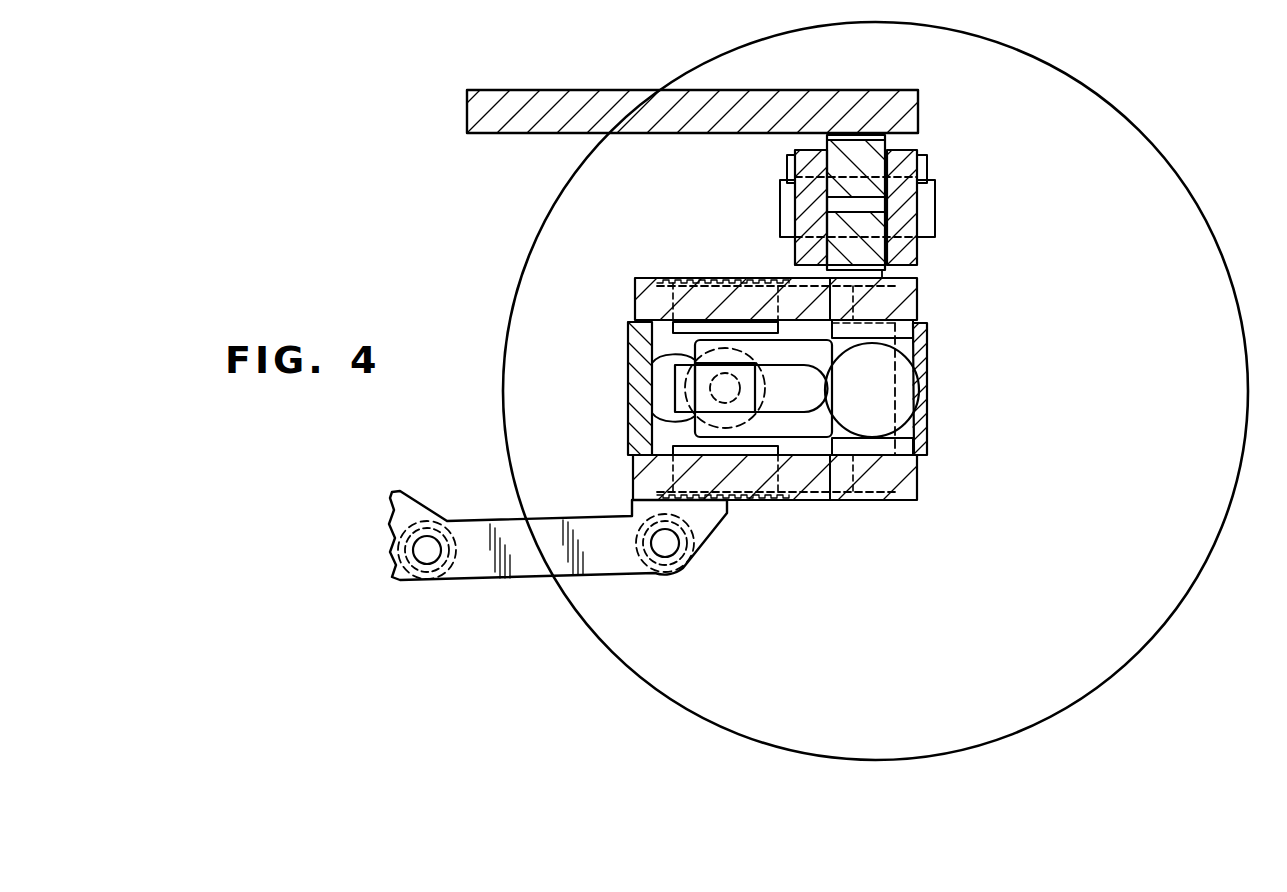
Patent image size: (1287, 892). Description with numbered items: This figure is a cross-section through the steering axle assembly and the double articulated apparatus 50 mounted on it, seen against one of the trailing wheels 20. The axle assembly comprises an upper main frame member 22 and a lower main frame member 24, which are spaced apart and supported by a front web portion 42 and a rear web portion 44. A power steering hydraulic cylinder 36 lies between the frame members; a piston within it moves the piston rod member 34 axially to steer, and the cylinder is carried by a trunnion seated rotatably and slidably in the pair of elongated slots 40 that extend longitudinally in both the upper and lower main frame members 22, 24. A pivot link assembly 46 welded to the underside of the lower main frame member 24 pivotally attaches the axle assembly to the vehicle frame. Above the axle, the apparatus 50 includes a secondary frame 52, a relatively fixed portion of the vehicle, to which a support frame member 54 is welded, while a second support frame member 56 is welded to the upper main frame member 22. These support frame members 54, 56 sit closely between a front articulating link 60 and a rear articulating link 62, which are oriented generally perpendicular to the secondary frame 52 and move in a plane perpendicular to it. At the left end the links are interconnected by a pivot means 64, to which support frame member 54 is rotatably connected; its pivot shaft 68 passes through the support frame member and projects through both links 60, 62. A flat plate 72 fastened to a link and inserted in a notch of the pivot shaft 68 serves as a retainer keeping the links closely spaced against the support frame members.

The trailing wheels 20 is at (1120, 143).
The upper main frame member 22 is at (636, 290).
The lower main frame member 24 is at (633, 480).
The piston rod member 34 is at (742, 388).
The power steering hydraulic cylinder 36 is at (660, 362).
The elongated slots 40 is at (735, 280).
The front web portion 42 is at (927, 410).
The rear web portion 44 is at (628, 412).
The pivot link assembly 46 is at (540, 592).
The double articulated apparatus 50 is at (950, 100).
The secondary frame 52 is at (873, 90).
The support frame member 54 is at (843, 147).
The support frame member 56 is at (872, 257).
The front articulating link 60 is at (917, 150).
The rear articulating link 62 is at (788, 156).
The pivot means 64 is at (958, 205).
The pivot shaft 68 is at (780, 198).
The flat plate 72 is at (927, 166).